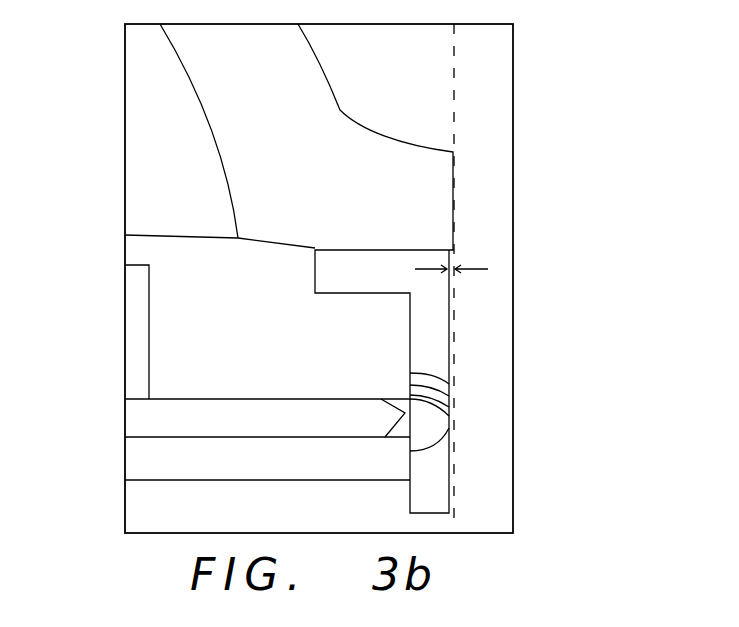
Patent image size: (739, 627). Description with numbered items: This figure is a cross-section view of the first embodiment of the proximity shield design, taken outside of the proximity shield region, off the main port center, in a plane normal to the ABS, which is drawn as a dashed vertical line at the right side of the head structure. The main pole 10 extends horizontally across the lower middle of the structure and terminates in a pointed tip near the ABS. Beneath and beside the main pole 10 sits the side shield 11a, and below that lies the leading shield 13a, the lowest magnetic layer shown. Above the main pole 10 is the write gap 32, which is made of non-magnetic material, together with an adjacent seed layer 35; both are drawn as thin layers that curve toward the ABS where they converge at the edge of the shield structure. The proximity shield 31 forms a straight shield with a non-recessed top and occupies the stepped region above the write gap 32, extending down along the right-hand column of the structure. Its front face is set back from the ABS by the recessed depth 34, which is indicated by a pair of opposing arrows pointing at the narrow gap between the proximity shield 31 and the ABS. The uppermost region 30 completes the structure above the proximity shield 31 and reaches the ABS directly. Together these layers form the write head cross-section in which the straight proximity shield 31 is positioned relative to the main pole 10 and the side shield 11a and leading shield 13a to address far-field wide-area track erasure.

The main pole 10 is at (135, 417).
The side shield 11a is at (433, 422).
The leading shield 13a is at (430, 487).
The upper magnetic pole 30 is at (430, 215).
The proximity shield 31 is at (430, 326).
The write gap 32 is at (448, 401).
The recessed depth 34 is at (488, 269).
The seed layer 35 is at (445, 386).
The air bearing surface ABS is at (475, 8).